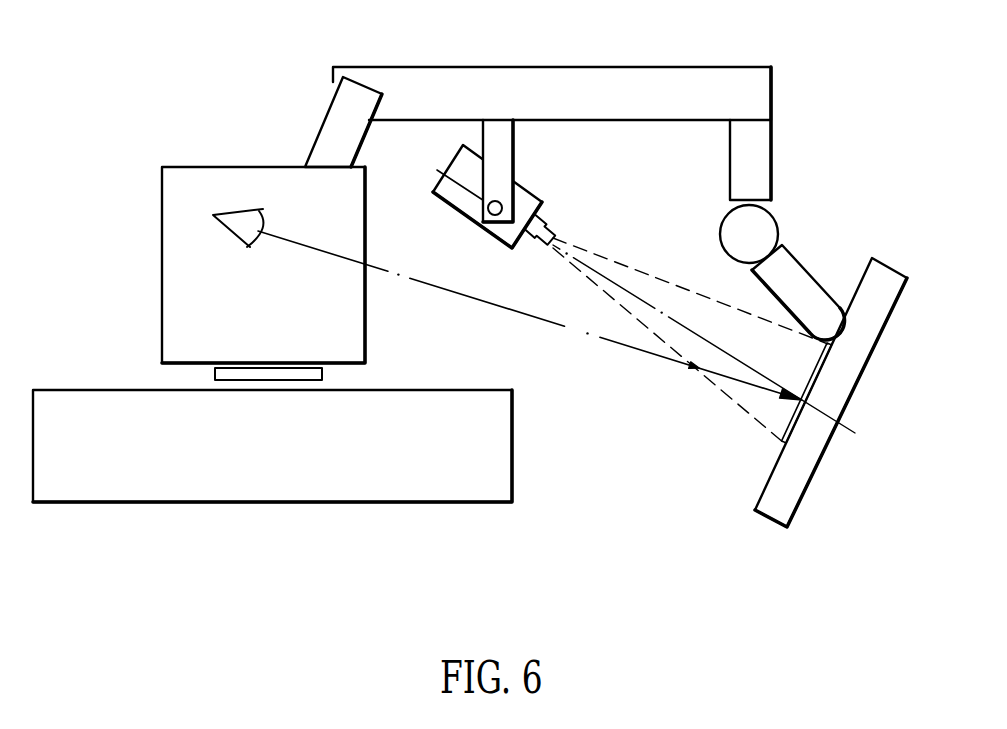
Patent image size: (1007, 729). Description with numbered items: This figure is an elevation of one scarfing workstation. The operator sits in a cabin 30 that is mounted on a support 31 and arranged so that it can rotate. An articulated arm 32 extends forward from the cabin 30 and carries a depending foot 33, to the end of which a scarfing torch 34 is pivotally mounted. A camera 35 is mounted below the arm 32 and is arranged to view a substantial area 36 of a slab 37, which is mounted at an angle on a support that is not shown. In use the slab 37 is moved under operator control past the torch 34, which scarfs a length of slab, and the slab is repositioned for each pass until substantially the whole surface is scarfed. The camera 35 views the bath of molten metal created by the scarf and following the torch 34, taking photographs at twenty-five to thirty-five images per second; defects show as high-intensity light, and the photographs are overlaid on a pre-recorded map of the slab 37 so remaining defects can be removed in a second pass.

The cabin 30 is at (280, 337).
The support 31 is at (280, 468).
The articulated arm 32 is at (512, 90).
The depending foot 33 is at (750, 162).
The scarfing torch 34 is at (798, 290).
The camera 35 is at (520, 197).
The area 36 is at (790, 420).
The slab 37 is at (813, 433).